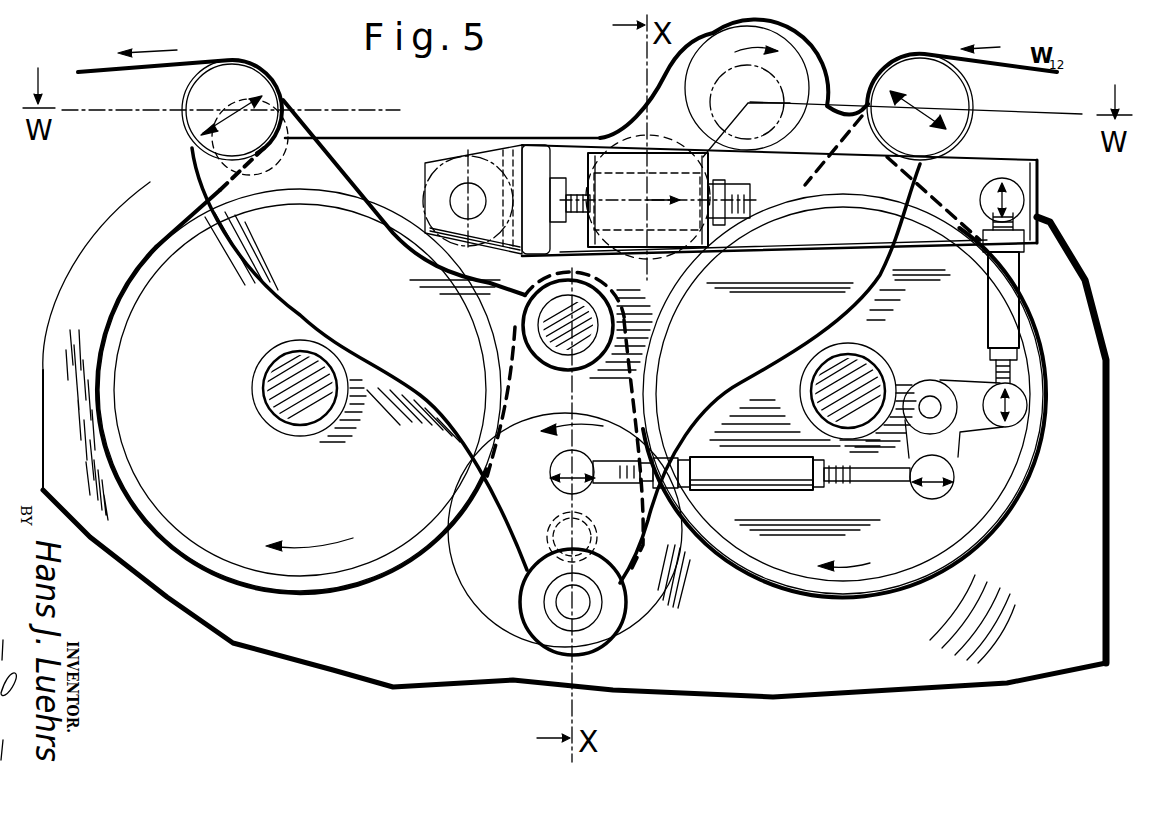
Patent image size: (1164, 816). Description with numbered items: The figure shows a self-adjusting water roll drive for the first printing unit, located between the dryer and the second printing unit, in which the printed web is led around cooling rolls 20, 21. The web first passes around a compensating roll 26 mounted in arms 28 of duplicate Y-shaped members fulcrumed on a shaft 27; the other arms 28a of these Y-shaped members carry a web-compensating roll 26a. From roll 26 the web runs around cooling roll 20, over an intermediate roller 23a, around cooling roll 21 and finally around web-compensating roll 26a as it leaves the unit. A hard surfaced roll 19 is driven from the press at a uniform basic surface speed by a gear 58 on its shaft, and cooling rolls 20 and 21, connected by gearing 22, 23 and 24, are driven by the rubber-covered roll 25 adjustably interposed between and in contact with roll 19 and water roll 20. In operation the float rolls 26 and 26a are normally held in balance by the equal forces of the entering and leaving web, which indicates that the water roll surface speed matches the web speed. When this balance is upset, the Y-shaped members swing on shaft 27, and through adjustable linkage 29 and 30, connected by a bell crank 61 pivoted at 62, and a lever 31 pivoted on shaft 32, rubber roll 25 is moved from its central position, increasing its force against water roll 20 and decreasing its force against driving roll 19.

The hard surfaced roll 19 is at (800, 52).
The cooling roll 20 is at (1053, 367).
The cooling roll 21 is at (157, 273).
The gearing 22 is at (657, 423).
The gearing 23 is at (672, 603).
The intermediate roller 23a is at (563, 380).
The gearing 24 is at (143, 490).
The rubber-covered roll 25 is at (627, 137).
The compensating roll 26 is at (973, 91).
The web-compensating roll 26a is at (182, 100).
The shaft 27 is at (567, 610).
The arms 28 is at (838, 318).
The arms 28a is at (393, 370).
The adjustable linkage 29 is at (773, 494).
The adjustable linkage 30 is at (1021, 282).
The lever 31 is at (813, 257).
The shaft 32 is at (533, 201).
The gear 58 is at (712, 88).
The bell crank 61 is at (967, 390).
The pivot 62 is at (927, 393).